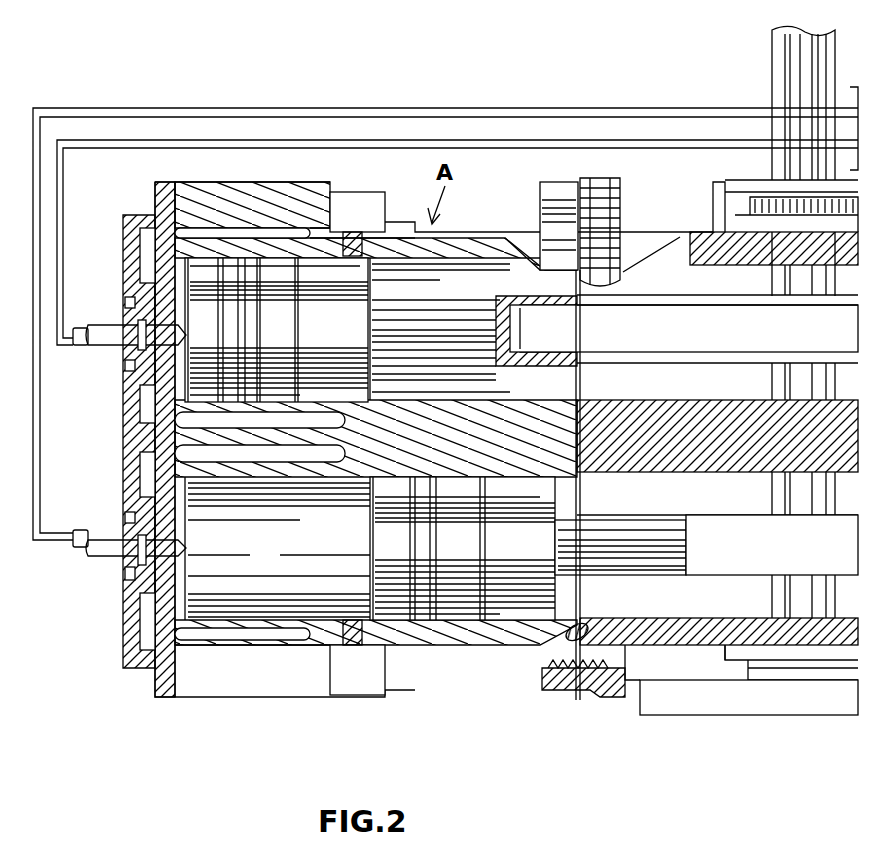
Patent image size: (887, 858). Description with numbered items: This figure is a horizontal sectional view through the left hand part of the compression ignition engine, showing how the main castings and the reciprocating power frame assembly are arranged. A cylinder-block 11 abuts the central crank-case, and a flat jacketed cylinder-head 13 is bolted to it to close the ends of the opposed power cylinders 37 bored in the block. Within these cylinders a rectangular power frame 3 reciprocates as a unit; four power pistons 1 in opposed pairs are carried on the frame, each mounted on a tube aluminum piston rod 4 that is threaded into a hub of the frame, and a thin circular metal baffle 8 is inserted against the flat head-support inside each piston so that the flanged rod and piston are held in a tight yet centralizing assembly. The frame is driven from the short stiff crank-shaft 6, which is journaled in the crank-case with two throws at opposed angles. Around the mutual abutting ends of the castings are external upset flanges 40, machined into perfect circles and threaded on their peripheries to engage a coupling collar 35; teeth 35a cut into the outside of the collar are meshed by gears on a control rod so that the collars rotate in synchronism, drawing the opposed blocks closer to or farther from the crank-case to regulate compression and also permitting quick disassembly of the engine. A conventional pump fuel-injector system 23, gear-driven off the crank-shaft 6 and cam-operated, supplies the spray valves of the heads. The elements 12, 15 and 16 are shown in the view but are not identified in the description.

The power piston 1 is at (398, 290).
The power frame 3 is at (652, 300).
The piston rod 4 is at (428, 312).
The crank-shaft 6 is at (772, 72).
The circular metal baffle 8 is at (577, 150).
The cylinder-block 11 is at (262, 182).
The brush holder block 12 is at (370, 185).
The cylinder-head 13 is at (123, 606).
The pin 15 is at (585, 626).
The terminal pin 16 is at (110, 325).
The pump fuel-injector system 23 is at (850, 100).
The coupling collar 35 is at (546, 182).
The teeth 35a is at (612, 214).
The power cylinder 37 is at (345, 318).
The upset flange 40 is at (545, 652).